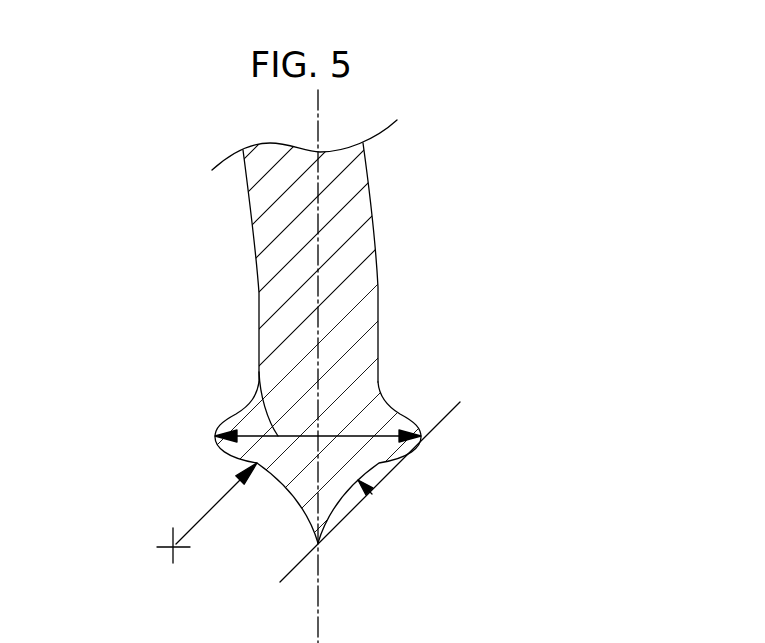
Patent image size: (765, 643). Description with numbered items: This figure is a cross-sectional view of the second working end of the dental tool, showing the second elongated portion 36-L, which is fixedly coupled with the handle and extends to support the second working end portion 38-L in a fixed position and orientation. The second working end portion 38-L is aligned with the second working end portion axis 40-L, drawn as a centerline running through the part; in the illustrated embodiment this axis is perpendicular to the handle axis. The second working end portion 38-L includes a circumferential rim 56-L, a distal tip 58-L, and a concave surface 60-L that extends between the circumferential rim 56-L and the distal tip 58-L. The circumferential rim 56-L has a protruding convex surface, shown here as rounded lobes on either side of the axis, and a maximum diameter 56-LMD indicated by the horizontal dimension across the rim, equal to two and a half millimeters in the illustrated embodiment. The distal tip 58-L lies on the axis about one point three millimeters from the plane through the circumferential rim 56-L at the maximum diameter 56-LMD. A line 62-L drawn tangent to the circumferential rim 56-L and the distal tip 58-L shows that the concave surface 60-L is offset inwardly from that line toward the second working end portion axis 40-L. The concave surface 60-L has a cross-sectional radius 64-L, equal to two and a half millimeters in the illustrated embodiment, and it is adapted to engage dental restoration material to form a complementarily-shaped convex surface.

The second elongated portion 36-L is at (368, 203).
The second working end portion 38-L is at (137, 372).
The second working end portion axis 40-L is at (320, 618).
The circumferential rim 56-L is at (414, 428).
The maximum diameter 56-LMD is at (260, 372).
The distal tip 58-L is at (294, 539).
The concave surface 60-L is at (371, 493).
The line tangent to the circumferential rim and the distal tip 62-L is at (442, 423).
The cross-sectional radius 64-L is at (213, 505).